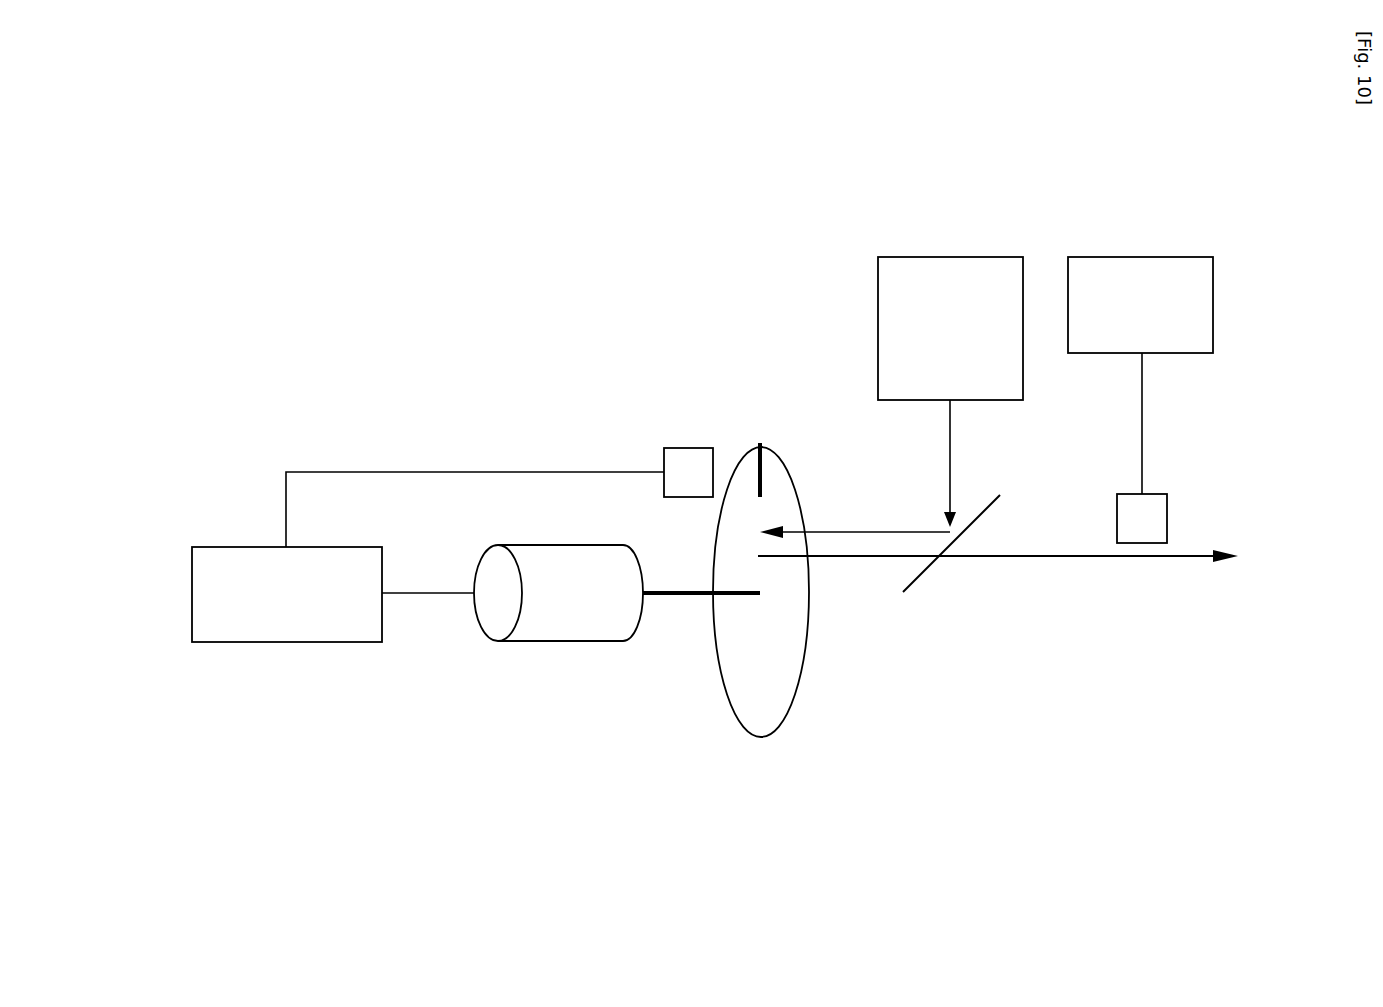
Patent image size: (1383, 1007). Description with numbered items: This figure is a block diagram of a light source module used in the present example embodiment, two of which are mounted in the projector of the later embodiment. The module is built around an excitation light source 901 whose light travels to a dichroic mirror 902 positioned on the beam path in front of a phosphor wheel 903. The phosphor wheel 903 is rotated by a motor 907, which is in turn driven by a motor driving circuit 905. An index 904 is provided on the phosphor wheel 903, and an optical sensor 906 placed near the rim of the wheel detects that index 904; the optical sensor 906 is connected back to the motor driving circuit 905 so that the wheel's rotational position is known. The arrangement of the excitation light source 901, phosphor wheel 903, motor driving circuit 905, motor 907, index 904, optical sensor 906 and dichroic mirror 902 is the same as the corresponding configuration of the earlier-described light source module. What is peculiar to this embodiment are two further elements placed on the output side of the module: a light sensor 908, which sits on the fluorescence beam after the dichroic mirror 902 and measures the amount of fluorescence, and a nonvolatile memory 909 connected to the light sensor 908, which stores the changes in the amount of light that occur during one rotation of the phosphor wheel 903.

The excitation light source 901 is at (950, 257).
The dichroic mirror 902 is at (920, 580).
The phosphor wheel 903 is at (757, 737).
The index 904 is at (760, 452).
The motor driving circuit 905 is at (192, 595).
The optical sensor 906 is at (688, 447).
The motor 907 is at (558, 641).
The light sensor 908 is at (1167, 520).
The nonvolatile memory 909 is at (1142, 257).